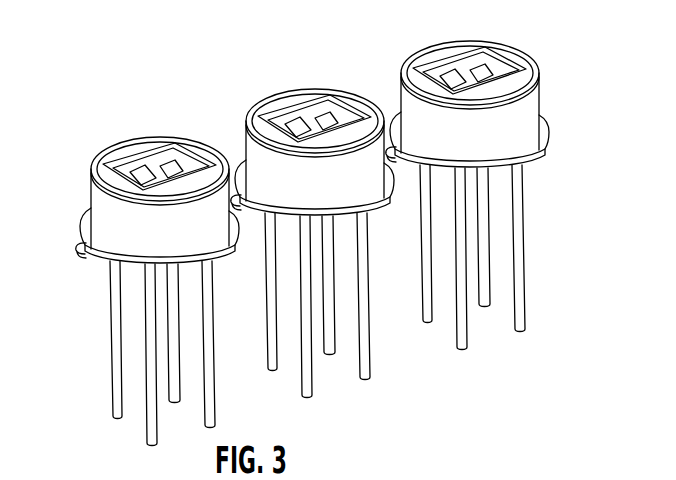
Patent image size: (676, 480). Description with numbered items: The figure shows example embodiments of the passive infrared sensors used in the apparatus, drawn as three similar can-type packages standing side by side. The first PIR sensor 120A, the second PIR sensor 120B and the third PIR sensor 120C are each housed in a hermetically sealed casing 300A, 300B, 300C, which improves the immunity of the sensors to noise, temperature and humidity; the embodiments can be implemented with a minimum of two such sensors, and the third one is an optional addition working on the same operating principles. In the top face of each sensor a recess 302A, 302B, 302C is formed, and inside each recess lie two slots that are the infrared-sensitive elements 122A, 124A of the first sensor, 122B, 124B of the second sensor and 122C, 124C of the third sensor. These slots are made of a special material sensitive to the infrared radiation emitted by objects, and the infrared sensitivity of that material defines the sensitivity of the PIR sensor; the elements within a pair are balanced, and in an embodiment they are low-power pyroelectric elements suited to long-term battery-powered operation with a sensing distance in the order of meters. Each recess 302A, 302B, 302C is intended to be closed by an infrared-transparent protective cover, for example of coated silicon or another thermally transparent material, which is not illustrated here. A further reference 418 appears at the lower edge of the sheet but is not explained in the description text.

The hermetically sealed casing 300A is at (133, 274).
The hermetically sealed casing 300B is at (288, 226).
The hermetically sealed casing 300C is at (443, 178).
The first PIR sensor 120A is at (90, 185).
The second PIR sensor 120B is at (283, 145).
The third PIR sensor 120C is at (438, 97).
The infrared-sensitive element 122A is at (139, 174).
The infrared-sensitive element 122B is at (267, 104).
The infrared-sensitive element 122C is at (422, 56).
The infrared-sensitive element 124A is at (166, 162).
The infrared-sensitive element 124B is at (310, 92).
The infrared-sensitive element 124C is at (465, 44).
The recess 302A is at (190, 168).
The recess 302B is at (314, 143).
The recess 302C is at (469, 95).
The lead 418 is at (174, 476).